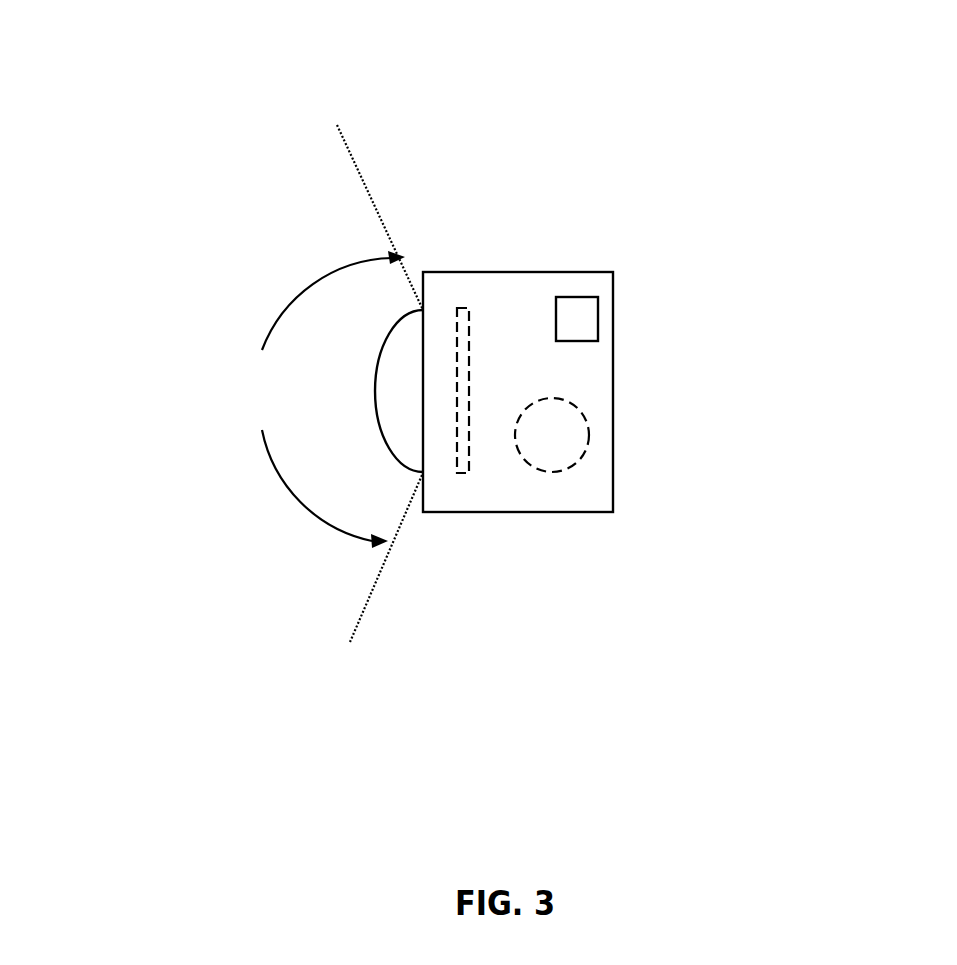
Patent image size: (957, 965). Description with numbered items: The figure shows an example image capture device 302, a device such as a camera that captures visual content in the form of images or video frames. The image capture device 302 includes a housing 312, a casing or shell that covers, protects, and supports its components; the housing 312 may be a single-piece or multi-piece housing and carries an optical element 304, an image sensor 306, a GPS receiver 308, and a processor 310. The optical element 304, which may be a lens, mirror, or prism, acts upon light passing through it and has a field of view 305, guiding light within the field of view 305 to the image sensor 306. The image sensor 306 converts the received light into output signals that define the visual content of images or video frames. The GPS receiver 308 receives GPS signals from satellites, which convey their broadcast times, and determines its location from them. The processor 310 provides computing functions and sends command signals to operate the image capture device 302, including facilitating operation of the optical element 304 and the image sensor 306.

The image capture device 302 is at (581, 127).
The optical element 304 is at (400, 463).
The field of view 305 is at (295, 383).
The image sensor 306 is at (463, 310).
The GPS receiver 308 is at (597, 310).
The processor 310 is at (588, 433).
The housing 312 is at (529, 513).